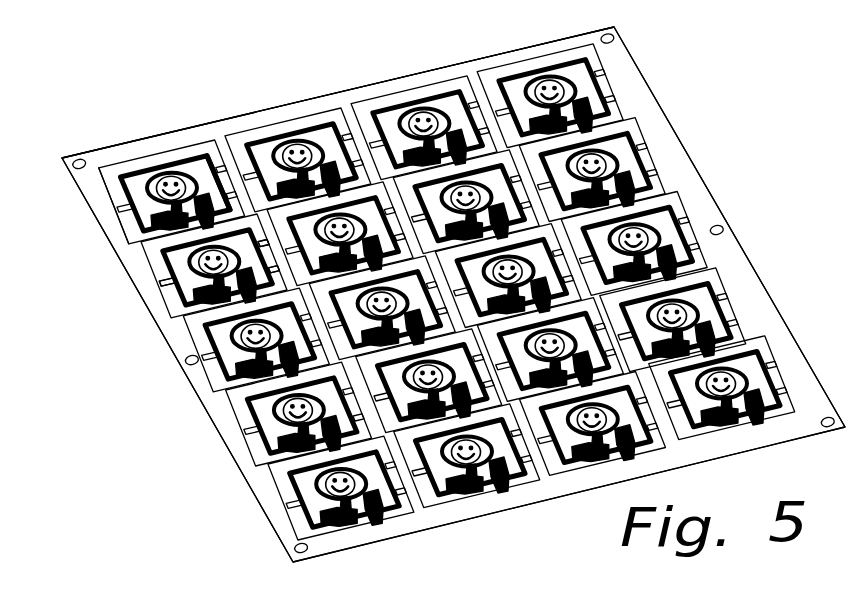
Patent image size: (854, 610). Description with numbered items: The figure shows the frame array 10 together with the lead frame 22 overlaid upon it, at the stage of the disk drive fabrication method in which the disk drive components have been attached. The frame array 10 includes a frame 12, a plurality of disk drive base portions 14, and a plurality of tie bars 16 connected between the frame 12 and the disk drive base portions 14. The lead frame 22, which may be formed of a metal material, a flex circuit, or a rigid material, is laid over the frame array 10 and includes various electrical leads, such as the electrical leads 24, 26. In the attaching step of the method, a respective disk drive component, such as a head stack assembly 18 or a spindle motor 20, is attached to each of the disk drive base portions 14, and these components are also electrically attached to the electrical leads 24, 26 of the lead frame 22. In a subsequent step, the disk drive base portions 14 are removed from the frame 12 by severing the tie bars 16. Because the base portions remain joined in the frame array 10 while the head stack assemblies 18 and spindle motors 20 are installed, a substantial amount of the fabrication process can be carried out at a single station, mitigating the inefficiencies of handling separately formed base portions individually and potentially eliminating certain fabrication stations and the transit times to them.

The frame array 10 is at (132, 377).
The frame 12 is at (137, 307).
The disk drive base portions 14 is at (135, 176).
The tie bars 16 is at (128, 208).
The head stack assembly 18 is at (131, 212).
The spindle motor 20 is at (174, 174).
The lead frame 22 is at (386, 82).
The electrical leads 24 is at (148, 267).
The electrical leads 26 is at (221, 200).